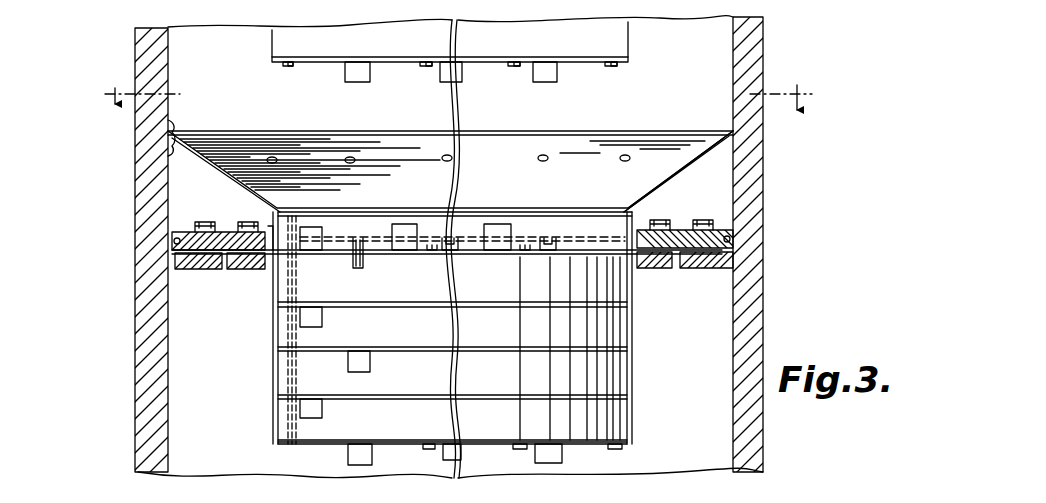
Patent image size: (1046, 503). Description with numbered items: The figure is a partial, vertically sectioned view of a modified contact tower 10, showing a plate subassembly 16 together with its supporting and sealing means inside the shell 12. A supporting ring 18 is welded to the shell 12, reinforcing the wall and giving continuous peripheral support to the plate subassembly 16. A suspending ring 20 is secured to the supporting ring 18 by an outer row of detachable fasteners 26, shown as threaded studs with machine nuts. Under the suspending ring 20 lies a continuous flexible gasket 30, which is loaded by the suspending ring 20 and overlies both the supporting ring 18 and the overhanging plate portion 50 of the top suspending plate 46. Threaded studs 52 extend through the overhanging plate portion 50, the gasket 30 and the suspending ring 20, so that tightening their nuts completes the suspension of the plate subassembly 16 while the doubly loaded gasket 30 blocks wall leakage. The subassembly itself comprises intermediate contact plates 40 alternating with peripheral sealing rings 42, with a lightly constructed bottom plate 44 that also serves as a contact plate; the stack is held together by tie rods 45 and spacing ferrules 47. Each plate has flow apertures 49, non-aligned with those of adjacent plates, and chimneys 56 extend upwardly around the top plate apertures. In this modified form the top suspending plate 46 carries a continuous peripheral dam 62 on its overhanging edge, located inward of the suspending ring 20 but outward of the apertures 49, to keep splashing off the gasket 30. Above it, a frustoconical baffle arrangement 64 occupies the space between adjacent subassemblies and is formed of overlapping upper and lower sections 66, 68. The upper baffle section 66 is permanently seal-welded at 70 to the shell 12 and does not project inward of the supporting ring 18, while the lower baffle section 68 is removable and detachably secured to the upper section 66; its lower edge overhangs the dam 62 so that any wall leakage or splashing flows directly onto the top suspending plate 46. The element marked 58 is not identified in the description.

The contact tower 10 is at (130, 54).
The shell 12 is at (135, 86).
The plate subassembly 16 is at (272, 52).
The supporting ring 18 is at (186, 262).
The suspending ring 20 is at (210, 224).
The detachable fastener 26 is at (706, 208).
The gasket 30 is at (234, 224).
The contact plate 40 is at (420, 326).
The peripheral sealing ring 42 is at (622, 337).
The bottom plate 44 is at (637, 442).
The tie rod 45 is at (288, 380).
The top suspending plate 46 is at (412, 254).
The spacing ferrule 47 is at (288, 430).
The flow aperture 49 is at (305, 256).
The overhanging plate portion 50 is at (640, 268).
The threaded stud 52 is at (657, 228).
The chimney 56 is at (412, 224).
The clamps 58 is at (367, 224).
The peripheral dam 62 is at (273, 226).
The frustoconical baffle arrangement 64 is at (528, 143).
The upper frustoconical baffle section 66 is at (620, 142).
The lower frustoconical baffle section 68 is at (656, 212).
The seal weld 70 is at (165, 152).